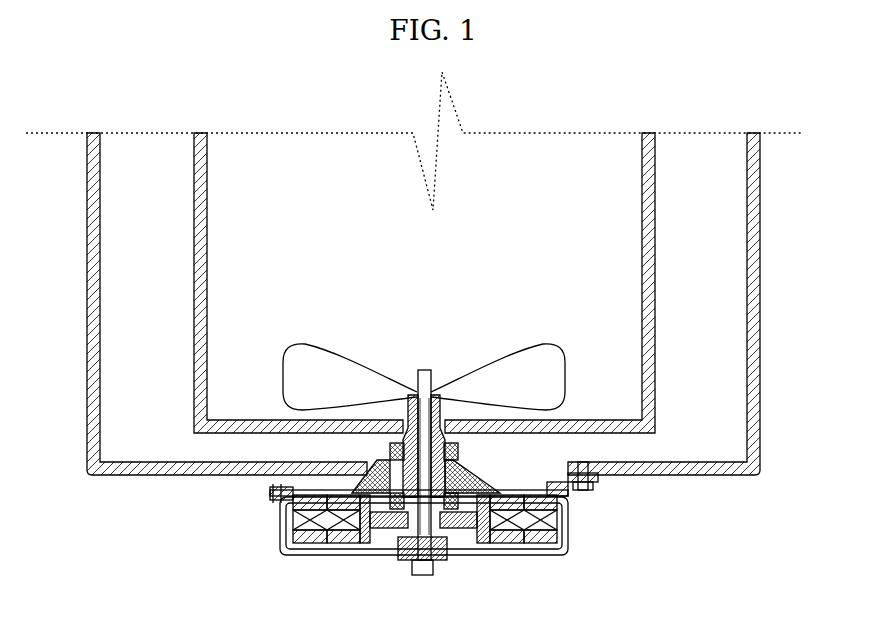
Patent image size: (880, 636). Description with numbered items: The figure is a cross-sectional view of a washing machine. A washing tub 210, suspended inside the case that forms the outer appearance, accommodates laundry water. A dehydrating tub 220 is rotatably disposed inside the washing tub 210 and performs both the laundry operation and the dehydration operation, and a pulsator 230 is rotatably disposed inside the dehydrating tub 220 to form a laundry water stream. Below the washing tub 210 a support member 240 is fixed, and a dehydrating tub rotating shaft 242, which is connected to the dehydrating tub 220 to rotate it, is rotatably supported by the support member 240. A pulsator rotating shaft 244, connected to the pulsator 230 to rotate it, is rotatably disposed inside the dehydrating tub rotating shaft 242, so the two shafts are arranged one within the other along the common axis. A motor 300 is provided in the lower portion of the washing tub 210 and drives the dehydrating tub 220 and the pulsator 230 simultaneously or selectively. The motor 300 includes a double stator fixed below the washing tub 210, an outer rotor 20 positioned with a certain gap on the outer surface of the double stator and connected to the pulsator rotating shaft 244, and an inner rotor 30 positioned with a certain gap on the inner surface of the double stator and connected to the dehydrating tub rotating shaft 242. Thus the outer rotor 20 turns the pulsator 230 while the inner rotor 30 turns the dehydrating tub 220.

The washing tub 210 is at (760, 355).
The dehydrating tub 220 is at (648, 255).
The pulsator 230 is at (541, 377).
The support member 240 is at (472, 475).
The dehydrating tub rotating shaft 242 is at (441, 440).
The pulsator rotating shaft 244 is at (426, 459).
The outer rotor 20 is at (572, 510).
The motor 300 is at (577, 528).
The inner rotor 30 is at (468, 528).